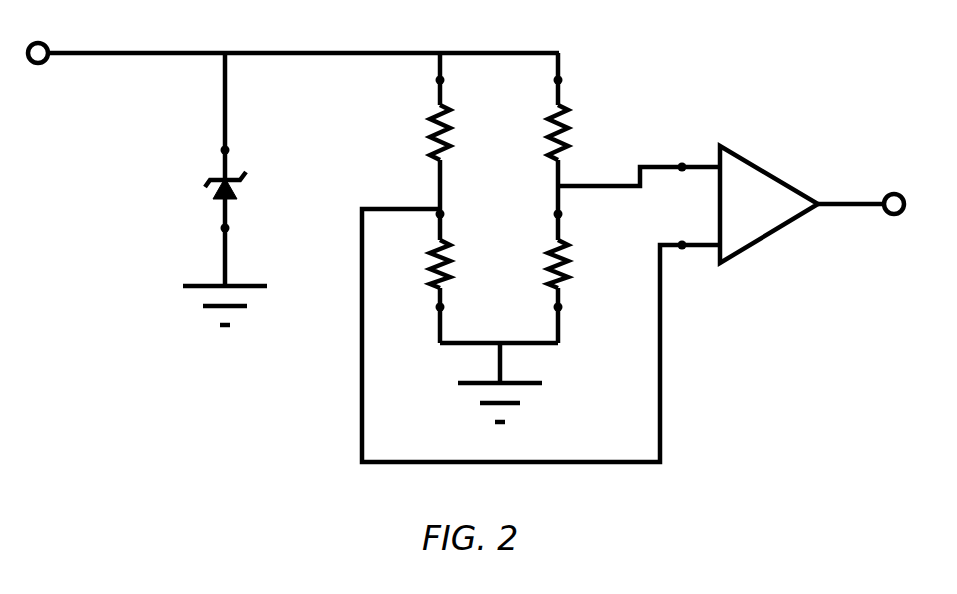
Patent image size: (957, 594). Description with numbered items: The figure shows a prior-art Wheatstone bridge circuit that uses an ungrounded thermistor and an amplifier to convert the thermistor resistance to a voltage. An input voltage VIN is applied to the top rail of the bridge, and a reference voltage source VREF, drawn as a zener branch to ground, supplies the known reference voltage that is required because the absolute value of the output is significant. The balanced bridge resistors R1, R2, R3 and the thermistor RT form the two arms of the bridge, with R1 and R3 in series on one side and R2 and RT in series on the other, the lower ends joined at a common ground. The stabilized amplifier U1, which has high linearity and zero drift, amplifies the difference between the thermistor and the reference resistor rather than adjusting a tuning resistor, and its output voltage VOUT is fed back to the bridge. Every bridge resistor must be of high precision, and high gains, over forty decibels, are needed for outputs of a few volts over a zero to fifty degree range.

The input voltage VIN is at (56, 34).
The reference voltage source VREF is at (191, 189).
The balanced bridge resistor R1 is at (414, 146).
The balanced bridge resistor R2 is at (580, 146).
The balanced bridge resistor R3 is at (416, 291).
The thermistor RT is at (581, 291).
The amplifier U1 is at (748, 204).
The output voltage VOUT is at (859, 182).